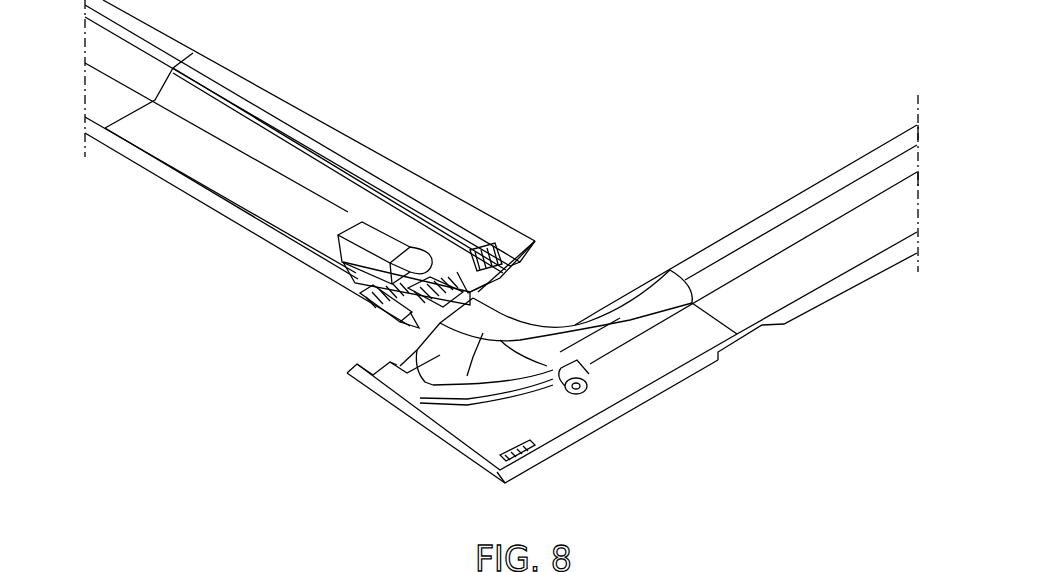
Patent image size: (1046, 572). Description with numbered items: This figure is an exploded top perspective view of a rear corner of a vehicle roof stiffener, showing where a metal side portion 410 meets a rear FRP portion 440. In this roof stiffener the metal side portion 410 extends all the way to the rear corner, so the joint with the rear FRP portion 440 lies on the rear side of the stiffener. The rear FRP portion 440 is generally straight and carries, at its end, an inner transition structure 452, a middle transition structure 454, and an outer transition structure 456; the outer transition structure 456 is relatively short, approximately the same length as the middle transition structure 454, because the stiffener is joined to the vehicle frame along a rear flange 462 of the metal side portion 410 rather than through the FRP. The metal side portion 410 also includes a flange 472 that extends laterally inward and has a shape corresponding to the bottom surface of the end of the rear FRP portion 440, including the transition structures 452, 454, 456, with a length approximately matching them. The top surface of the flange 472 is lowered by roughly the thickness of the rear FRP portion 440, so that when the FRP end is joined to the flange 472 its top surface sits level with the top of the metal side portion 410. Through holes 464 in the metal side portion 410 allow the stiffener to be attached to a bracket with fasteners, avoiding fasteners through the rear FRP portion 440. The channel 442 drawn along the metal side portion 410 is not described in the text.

The metal side portion 410 is at (796, 321).
The rear FRP portion 440 is at (244, 82).
The rail channel 442 is at (350, 148).
The inner transition structure 452 is at (515, 235).
The middle transition structure 454 is at (444, 270).
The outer transition structure 456 is at (390, 317).
The rear flange 462 is at (548, 456).
The through hole 464 is at (587, 390).
The flange 472 is at (500, 310).